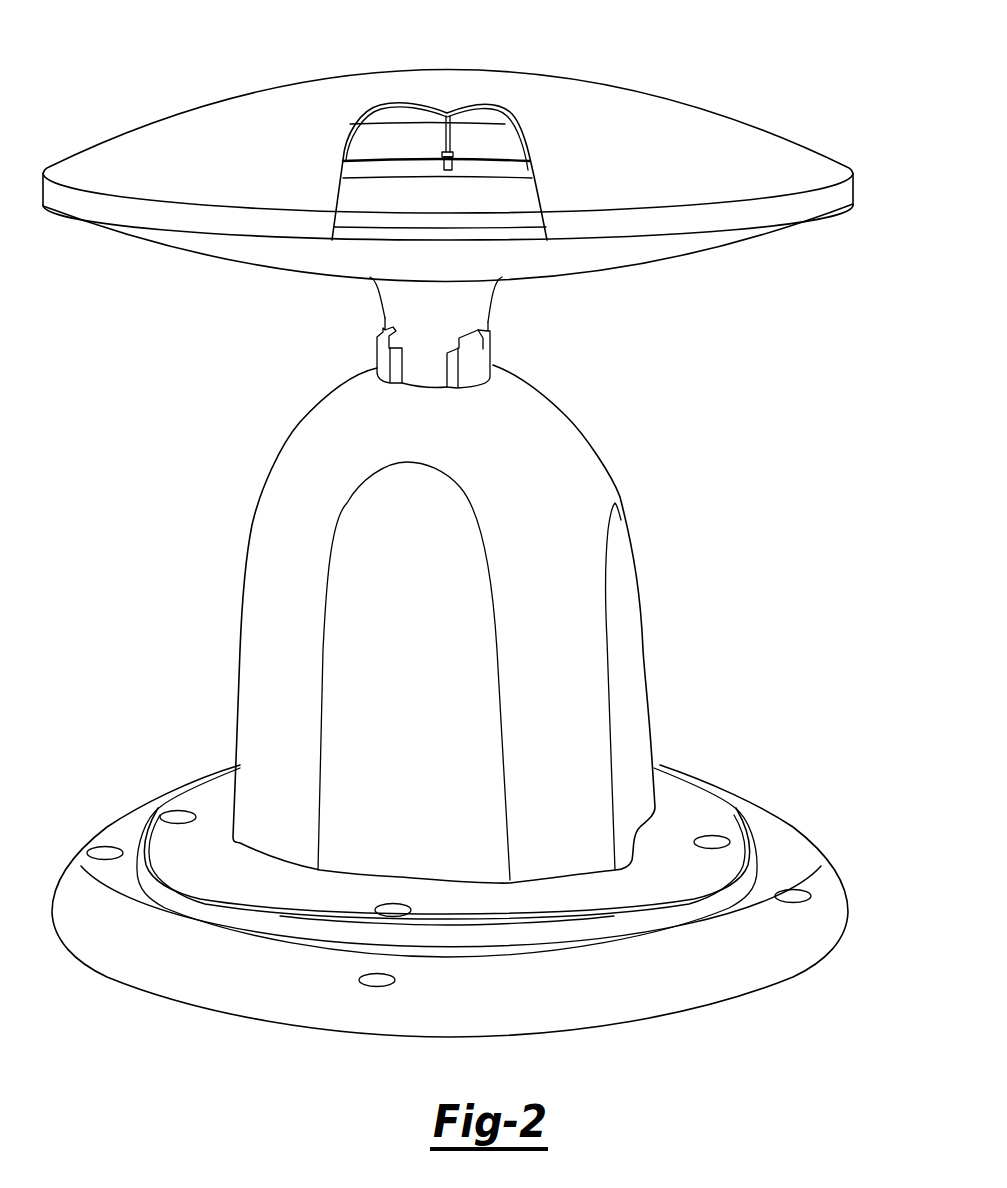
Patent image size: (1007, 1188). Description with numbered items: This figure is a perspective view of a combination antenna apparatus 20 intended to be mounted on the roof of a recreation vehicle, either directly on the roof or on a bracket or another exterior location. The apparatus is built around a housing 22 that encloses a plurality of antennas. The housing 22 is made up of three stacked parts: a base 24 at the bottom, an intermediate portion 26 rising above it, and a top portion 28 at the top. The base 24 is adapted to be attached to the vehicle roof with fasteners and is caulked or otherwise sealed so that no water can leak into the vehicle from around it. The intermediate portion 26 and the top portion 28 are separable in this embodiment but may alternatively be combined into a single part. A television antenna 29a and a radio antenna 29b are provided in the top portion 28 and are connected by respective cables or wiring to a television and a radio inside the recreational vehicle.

The combination antenna apparatus 20 is at (746, 56).
The housing 22 is at (293, 430).
The base 24 is at (780, 860).
The intermediate portion 26 is at (633, 670).
The top portion 28 is at (598, 255).
The television antenna 29a is at (397, 167).
The radio antenna 29b is at (513, 220).